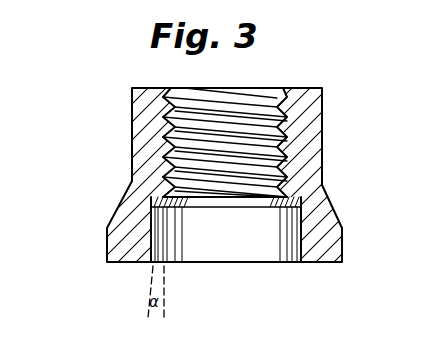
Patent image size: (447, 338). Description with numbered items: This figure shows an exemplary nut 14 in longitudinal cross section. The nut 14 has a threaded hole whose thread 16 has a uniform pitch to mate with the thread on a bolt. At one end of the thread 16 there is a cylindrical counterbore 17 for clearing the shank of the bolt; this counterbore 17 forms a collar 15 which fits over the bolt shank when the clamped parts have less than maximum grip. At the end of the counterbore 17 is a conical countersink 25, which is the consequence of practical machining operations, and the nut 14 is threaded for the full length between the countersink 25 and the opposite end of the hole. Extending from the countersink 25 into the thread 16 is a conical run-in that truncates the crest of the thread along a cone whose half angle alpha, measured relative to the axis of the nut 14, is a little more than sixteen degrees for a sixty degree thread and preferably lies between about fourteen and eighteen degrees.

The nut 14 is at (327, 166).
The collar 15 is at (107, 249).
The thread 16 is at (267, 88).
The counterbore 17 is at (297, 243).
The countersink 25 is at (290, 210).